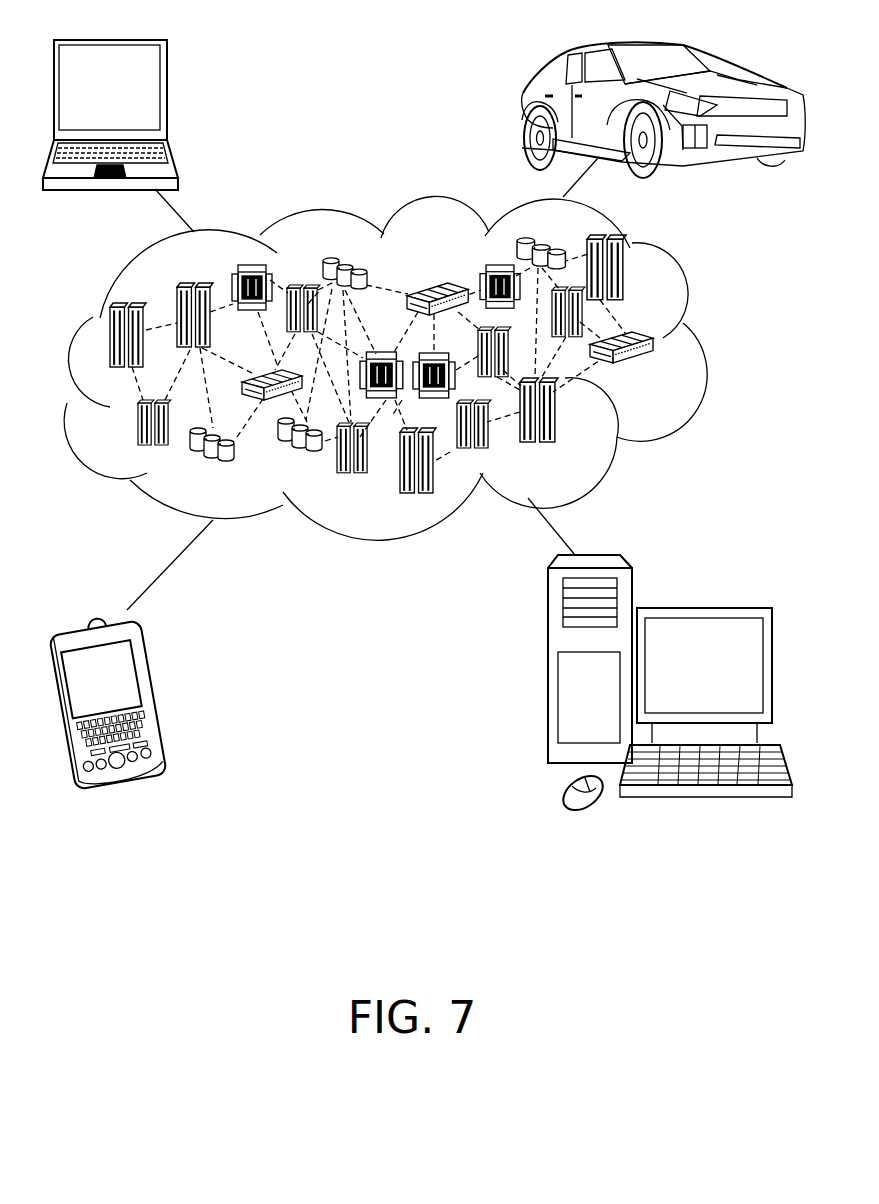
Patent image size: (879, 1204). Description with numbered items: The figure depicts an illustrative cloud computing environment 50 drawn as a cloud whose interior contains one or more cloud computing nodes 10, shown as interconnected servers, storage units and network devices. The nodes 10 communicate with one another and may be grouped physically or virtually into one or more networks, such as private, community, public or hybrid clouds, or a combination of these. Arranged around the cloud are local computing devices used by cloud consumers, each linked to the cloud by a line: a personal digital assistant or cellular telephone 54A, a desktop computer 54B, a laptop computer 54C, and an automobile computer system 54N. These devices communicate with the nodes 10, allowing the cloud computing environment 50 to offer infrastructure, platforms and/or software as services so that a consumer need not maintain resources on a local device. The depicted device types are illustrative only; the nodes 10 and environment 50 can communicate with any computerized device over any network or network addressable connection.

The cloud computing node 10 is at (657, 377).
The cloud computing environment 50 is at (702, 347).
The personal digital assistant or cellular telephone 54A is at (158, 691).
The desktop computer 54B is at (703, 607).
The laptop computer 54C is at (167, 97).
The automobile computer system 54N is at (522, 107).